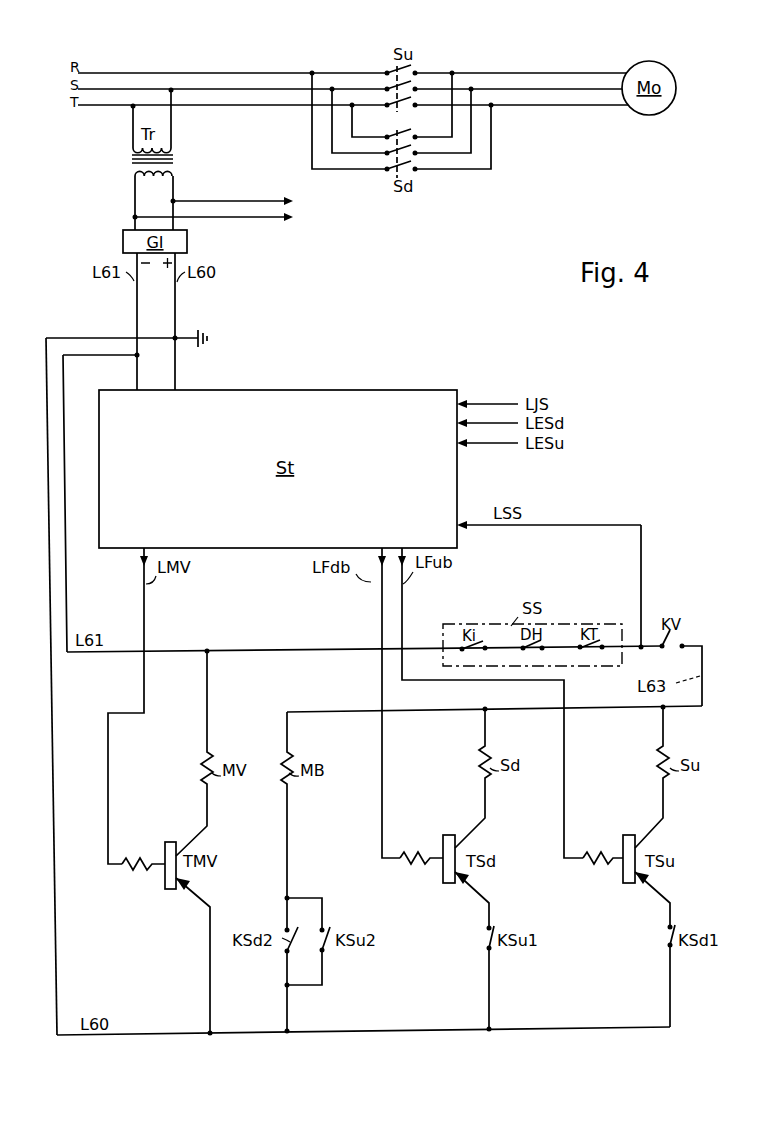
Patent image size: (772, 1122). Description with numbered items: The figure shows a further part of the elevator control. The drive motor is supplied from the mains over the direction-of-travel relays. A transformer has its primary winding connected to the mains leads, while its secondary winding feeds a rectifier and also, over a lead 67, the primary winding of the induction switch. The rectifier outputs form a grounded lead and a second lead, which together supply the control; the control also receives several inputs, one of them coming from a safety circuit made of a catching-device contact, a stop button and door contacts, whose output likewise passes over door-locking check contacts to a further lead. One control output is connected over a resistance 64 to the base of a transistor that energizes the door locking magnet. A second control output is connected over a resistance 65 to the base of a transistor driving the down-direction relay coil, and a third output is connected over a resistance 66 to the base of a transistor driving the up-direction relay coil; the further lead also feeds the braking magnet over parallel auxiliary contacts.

The resistance 64 is at (141, 860).
The resistance 65 is at (418, 849).
The resistance 66 is at (600, 849).
The lead 67 is at (298, 190).